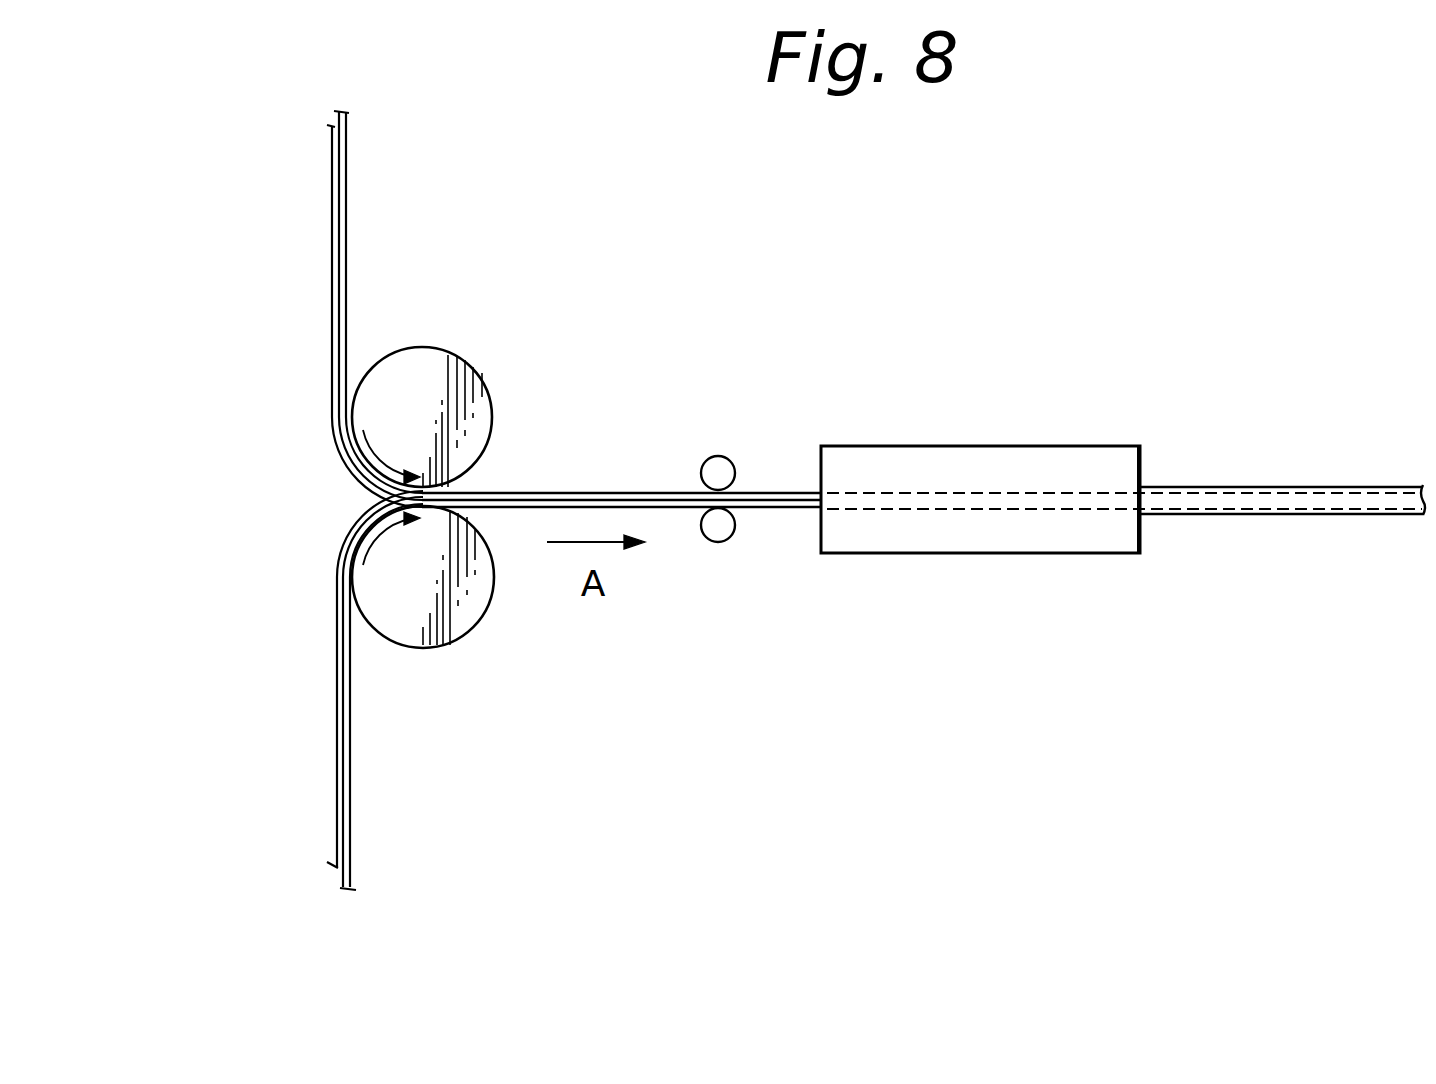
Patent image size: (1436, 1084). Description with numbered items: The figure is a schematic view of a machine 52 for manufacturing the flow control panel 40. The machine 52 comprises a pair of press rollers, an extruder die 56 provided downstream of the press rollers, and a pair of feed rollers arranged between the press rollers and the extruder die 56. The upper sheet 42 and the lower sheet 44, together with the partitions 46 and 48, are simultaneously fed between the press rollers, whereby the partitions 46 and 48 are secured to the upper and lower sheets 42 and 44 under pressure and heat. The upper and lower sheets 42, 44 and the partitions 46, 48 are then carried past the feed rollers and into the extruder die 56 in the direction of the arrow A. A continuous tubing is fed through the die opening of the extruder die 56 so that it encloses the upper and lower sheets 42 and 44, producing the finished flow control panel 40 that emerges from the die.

The flow control panel 40 is at (1289, 458).
The upper sheet 42 is at (346, 222).
The lower sheet 44 is at (351, 777).
The partition 46 is at (335, 428).
The partition 48 is at (335, 656).
The machine 52 is at (873, 342).
The extruder die 56 is at (1020, 447).